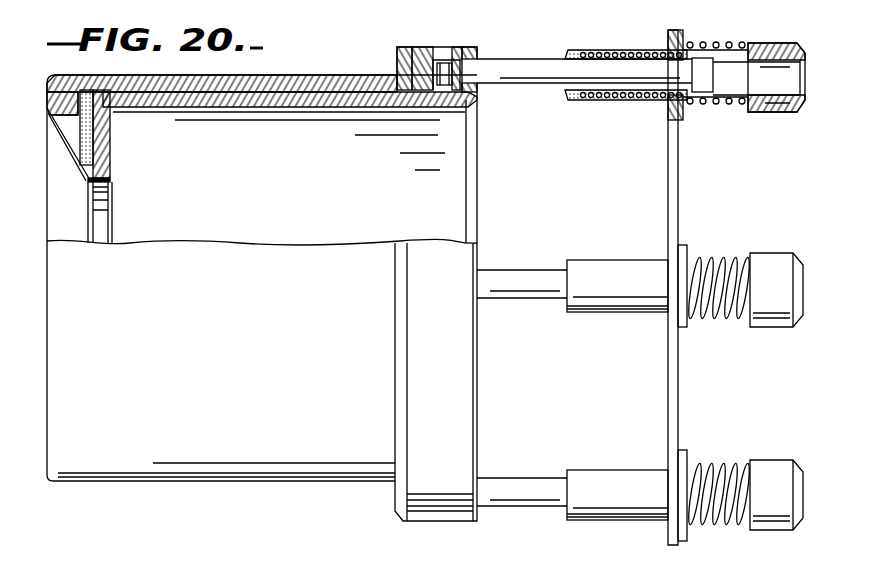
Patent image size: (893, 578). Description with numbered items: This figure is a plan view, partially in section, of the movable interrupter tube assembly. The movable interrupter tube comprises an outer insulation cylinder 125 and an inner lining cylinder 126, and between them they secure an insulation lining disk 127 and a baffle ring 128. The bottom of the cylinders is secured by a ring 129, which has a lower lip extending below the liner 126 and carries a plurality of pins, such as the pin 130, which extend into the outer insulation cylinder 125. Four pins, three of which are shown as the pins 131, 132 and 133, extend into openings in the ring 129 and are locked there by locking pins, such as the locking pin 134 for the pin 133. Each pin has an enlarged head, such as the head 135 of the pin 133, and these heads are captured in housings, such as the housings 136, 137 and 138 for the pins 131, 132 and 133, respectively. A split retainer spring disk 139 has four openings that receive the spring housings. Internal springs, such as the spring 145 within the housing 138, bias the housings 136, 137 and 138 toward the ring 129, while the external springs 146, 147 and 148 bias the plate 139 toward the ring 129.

The outer insulation cylinder 125 is at (250, 369).
The inner lining cylinder 126 is at (253, 108).
The insulation lining disk 127 is at (112, 163).
The baffle ring 128 is at (80, 163).
The ring 129 is at (452, 390).
The pin 130 is at (415, 47).
The pin 131 is at (531, 480).
The pin 132 is at (508, 302).
The pin 133 is at (506, 86).
The locking pin 134 is at (460, 43).
The head 135 is at (715, 77).
The housing 136 is at (628, 459).
The housing 137 is at (598, 312).
The housing 138 is at (630, 49).
The split retainer spring disk 139 is at (662, 195).
The spring 145 is at (592, 101).
The external spring 146 is at (704, 466).
The external spring 147 is at (757, 234).
The external spring 148 is at (724, 103).